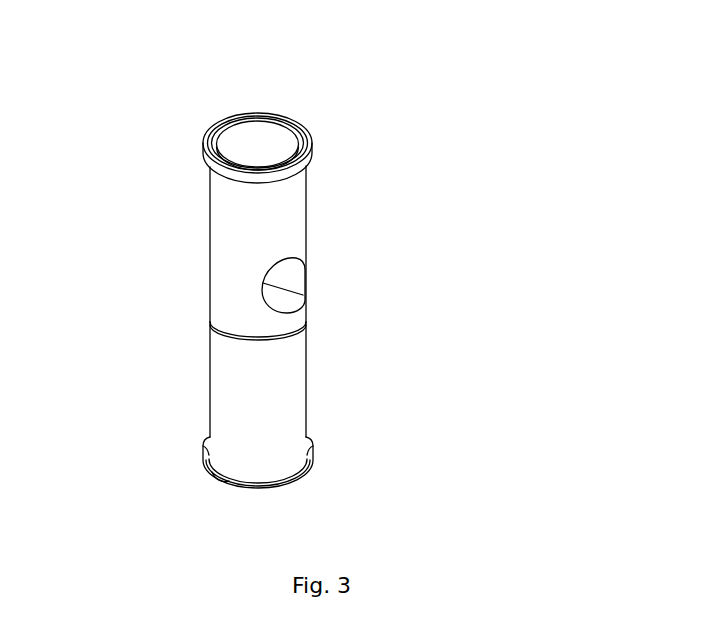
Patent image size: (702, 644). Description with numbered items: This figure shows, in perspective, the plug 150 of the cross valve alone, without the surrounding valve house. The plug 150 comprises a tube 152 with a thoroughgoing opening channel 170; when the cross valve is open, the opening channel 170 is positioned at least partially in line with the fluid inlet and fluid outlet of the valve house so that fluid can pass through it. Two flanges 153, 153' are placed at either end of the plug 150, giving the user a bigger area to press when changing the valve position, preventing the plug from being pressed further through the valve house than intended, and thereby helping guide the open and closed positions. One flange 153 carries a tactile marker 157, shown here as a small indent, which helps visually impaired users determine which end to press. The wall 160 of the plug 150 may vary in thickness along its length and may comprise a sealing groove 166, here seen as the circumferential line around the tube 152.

The plug 150 is at (478, 147).
The tube 152 is at (283, 410).
The flange 153 is at (200, 119).
The flange 153' is at (214, 455).
The tactile marker 157 is at (218, 477).
The wall 160 is at (228, 215).
The sealing groove 166 is at (212, 322).
The opening channel 170 is at (268, 285).